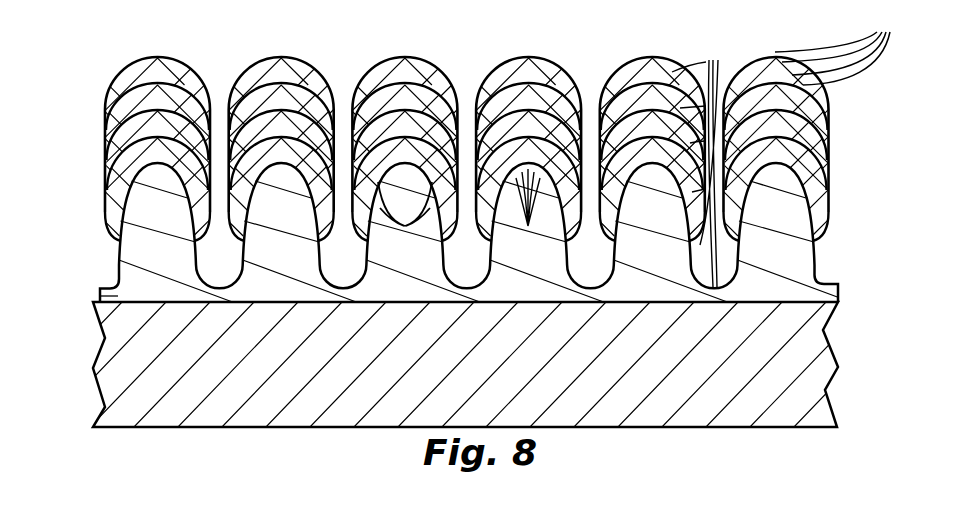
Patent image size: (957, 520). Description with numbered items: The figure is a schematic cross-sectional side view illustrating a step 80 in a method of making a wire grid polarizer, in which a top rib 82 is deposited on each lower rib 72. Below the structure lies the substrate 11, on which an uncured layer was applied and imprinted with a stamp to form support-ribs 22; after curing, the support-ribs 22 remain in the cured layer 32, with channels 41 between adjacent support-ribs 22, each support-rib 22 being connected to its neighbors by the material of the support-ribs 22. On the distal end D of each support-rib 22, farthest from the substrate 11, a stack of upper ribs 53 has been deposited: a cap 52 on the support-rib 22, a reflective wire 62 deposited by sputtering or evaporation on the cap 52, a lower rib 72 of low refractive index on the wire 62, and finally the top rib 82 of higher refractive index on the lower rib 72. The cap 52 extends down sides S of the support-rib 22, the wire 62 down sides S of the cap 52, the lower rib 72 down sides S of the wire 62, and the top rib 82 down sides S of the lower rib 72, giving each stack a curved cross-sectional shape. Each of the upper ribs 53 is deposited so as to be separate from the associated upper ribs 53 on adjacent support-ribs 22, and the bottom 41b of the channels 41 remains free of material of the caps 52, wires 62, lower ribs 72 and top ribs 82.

The substrate 11 is at (454, 388).
The support-rib 22 is at (141, 246).
The cured layer 32 is at (102, 297).
The channel 41 is at (204, 275).
The bottom of the channels 41b is at (218, 289).
The cap 52 is at (112, 191).
The wire 62 is at (110, 164).
The lower rib 72 is at (110, 137).
The top rib 82 is at (112, 94).
The upper rib 53 is at (699, 161).
The sides S is at (459, 211).
The distal end D is at (834, 47).
The step 80 is at (884, 331).